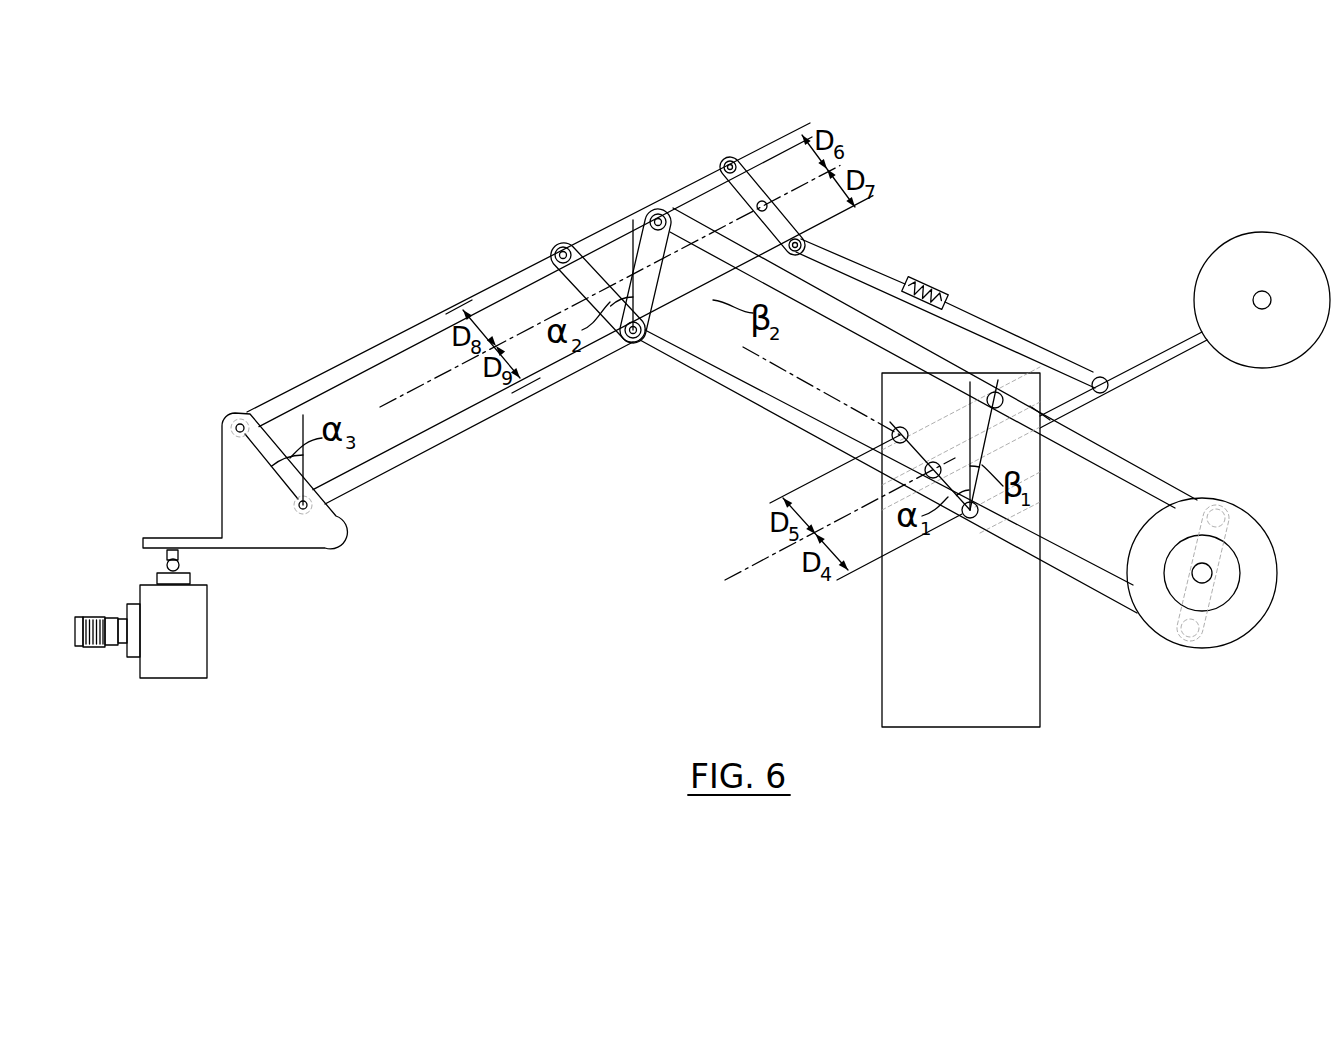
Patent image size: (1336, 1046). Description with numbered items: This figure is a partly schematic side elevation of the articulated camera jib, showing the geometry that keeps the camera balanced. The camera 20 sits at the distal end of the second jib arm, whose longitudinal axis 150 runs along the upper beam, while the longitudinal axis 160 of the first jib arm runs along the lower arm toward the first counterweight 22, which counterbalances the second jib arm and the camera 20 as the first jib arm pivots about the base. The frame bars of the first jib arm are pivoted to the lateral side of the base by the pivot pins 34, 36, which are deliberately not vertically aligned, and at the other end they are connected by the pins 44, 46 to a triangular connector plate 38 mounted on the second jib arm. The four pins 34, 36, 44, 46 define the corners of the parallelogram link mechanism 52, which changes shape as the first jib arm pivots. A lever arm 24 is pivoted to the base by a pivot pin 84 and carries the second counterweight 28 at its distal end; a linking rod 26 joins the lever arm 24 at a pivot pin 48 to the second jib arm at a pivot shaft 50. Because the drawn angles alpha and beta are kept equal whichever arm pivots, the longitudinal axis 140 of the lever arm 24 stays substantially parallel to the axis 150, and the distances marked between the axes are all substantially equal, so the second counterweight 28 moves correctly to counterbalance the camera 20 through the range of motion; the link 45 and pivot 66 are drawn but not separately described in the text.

The camera 20 is at (168, 666).
The first counterweight 22 is at (1252, 546).
The lever arm 24 is at (1158, 357).
The linking rod 26 is at (973, 313).
The second counterweight 28 is at (1256, 262).
The pivot pin 34 is at (972, 520).
The pivot pin 36 is at (1046, 400).
The triangular connector plate 38 is at (606, 342).
The pin 44 is at (633, 346).
The link 45 is at (604, 300).
The pin 46 is at (652, 212).
The pivot pin 48 is at (1103, 378).
The pivot shaft 50 is at (722, 168).
The parallelogram link mechanism 52 is at (856, 374).
The pivot 66 is at (556, 247).
The pivot pin 84 is at (942, 465).
The longitudinal axis of the lever arm 140 is at (758, 568).
The longitudinal axis of the second jib arm 150 is at (446, 372).
The longitudinal axis of the first jib arm 160 is at (778, 366).